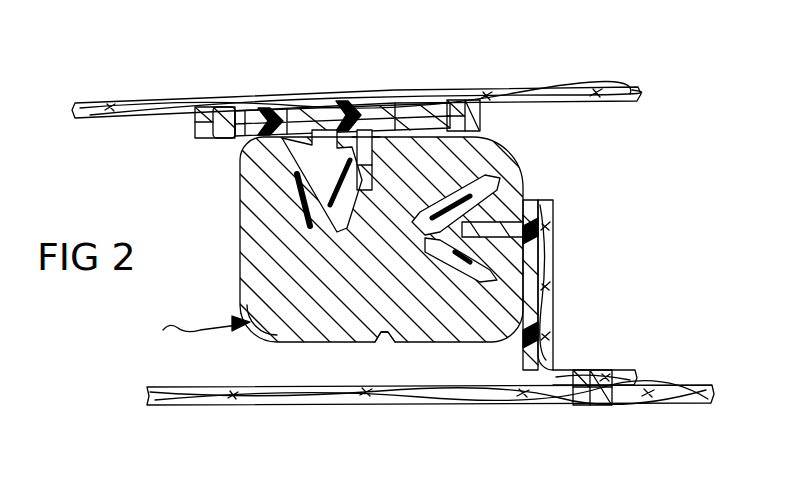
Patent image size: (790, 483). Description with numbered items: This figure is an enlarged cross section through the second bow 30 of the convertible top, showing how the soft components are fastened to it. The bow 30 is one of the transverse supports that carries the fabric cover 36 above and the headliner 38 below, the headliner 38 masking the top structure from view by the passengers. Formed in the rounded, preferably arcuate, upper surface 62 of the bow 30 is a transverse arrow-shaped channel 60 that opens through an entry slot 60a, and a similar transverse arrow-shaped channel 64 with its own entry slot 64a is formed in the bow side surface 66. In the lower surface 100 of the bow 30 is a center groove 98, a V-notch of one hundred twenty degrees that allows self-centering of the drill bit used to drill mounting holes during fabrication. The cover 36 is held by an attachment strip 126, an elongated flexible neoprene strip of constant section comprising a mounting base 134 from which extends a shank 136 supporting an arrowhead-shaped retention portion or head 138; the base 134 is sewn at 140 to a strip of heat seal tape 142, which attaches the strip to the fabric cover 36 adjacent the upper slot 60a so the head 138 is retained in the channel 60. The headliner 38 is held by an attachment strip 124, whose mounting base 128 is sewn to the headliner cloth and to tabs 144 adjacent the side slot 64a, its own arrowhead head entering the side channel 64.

The #2 bow 30 is at (189, 336).
The fabric cover 36 is at (110, 103).
The headliner 38 is at (502, 404).
The transverse arrow-shaped channel 60 is at (240, 248).
The entry slot 60a is at (368, 135).
The upper surface 62 is at (405, 130).
The transverse arrow-shaped channel 64 is at (512, 162).
The entry slot 64a is at (548, 222).
The bow side surface 66 is at (525, 182).
The center groove 98 is at (383, 340).
The lower surface 100 is at (298, 345).
The attachment strip 124 is at (545, 262).
The attachment strip 126 is at (245, 123).
The mounting base 128 is at (535, 303).
The mounting base 134 is at (288, 128).
The shank 136 is at (297, 173).
The retention portion or head 138 is at (320, 205).
The sewing 140 is at (218, 142).
The heat seal tape 142 is at (317, 110).
The tabs 144 is at (547, 347).